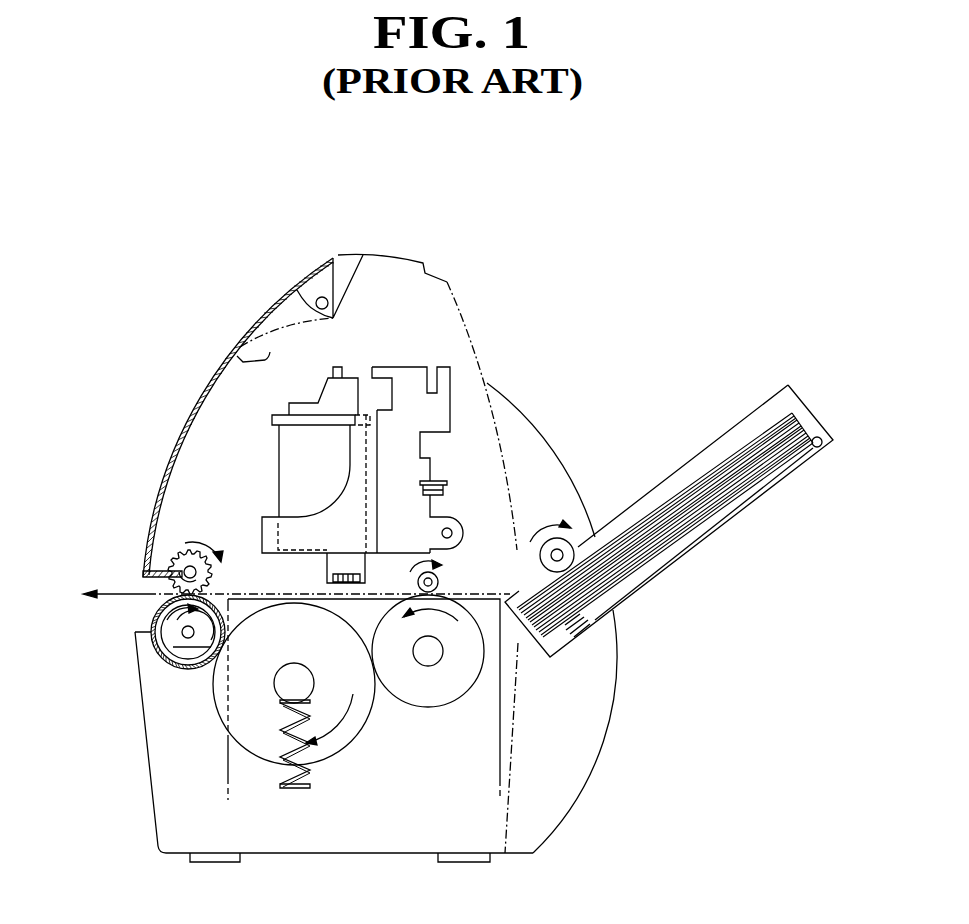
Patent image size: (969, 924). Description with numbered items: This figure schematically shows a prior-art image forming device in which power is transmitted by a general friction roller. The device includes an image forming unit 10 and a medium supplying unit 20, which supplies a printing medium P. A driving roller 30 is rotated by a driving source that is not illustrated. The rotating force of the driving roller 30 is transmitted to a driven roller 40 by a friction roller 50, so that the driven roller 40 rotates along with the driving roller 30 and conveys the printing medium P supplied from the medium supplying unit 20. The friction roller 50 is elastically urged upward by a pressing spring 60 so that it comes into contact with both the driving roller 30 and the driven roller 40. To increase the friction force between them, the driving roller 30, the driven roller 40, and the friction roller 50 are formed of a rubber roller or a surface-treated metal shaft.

The image forming unit 10 is at (422, 365).
The medium supplying unit 20 is at (725, 443).
The driving roller 30 is at (425, 690).
The driven roller 40 is at (148, 613).
The friction roller 50 is at (220, 695).
The pressing spring 60 is at (292, 788).
The printing medium P is at (128, 592).